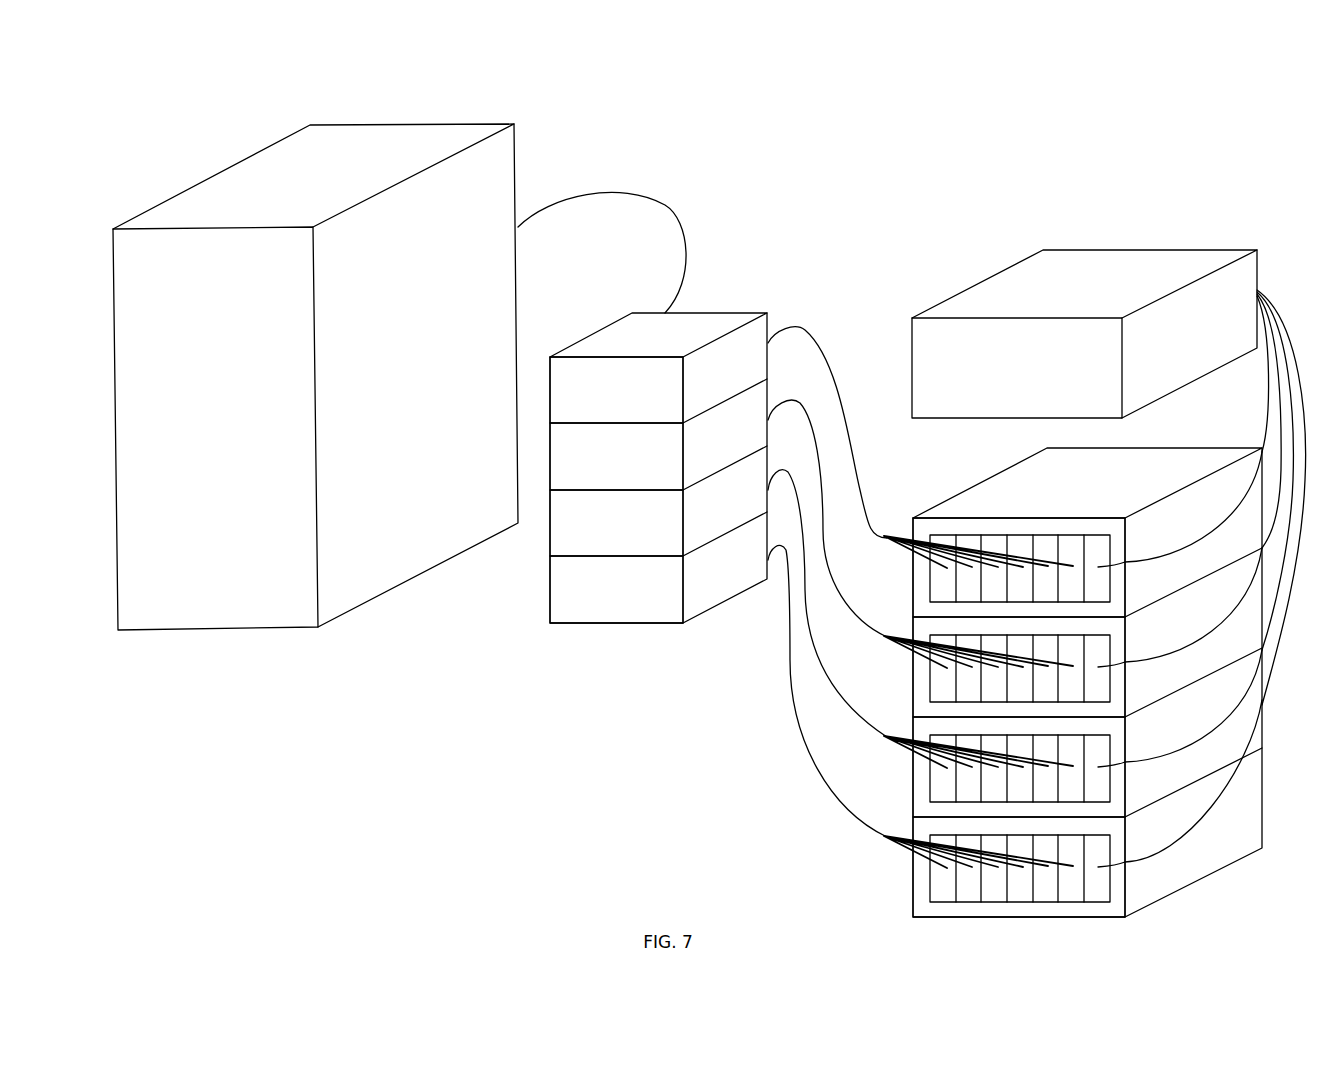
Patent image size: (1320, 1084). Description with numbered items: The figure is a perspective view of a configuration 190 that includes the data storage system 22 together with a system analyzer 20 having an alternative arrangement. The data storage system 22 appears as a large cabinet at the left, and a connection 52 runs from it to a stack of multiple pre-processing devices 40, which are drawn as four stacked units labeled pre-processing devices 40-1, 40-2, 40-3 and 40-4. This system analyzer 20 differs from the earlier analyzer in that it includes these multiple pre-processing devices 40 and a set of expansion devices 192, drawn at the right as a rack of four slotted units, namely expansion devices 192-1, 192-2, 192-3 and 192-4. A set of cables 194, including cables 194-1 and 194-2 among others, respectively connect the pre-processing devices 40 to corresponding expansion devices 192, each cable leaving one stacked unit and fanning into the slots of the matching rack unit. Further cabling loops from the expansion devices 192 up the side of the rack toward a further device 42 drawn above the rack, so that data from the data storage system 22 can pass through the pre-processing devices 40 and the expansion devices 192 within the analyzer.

The data storage system 22 is at (295, 628).
The pre-processing devices 40 is at (618, 487).
The pre-processing device 40-1 is at (599, 401).
The pre-processing device 40-2 is at (599, 467).
The pre-processing device 40-3 is at (599, 534).
The pre-processing device 40-4 is at (599, 601).
The cable 52 is at (677, 223).
The configuration 190 is at (830, 122).
The system analyzer 20 is at (1140, 166).
The controller 42 is at (1213, 250).
The set of cables 194 is at (1037, 547).
The cable 194-1 is at (810, 330).
The cable 194-2 is at (795, 397).
The set of expansion devices 192 is at (1013, 682).
The expansion device 192-1 is at (913, 572).
The expansion device 192-2 is at (913, 662).
The expansion device 192-3 is at (913, 768).
The expansion device 192-4 is at (913, 886).